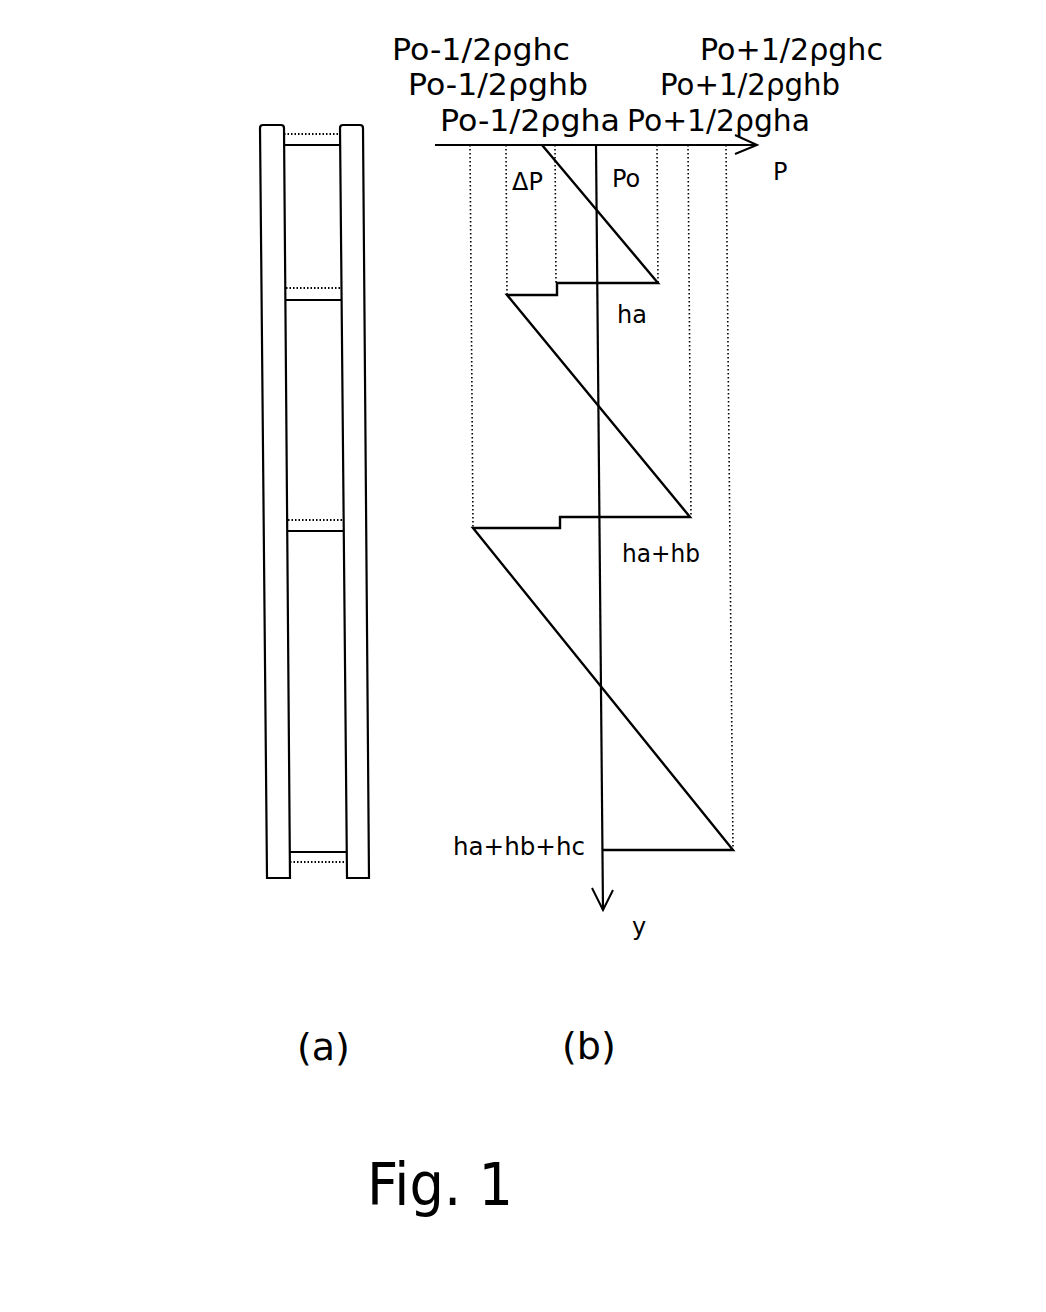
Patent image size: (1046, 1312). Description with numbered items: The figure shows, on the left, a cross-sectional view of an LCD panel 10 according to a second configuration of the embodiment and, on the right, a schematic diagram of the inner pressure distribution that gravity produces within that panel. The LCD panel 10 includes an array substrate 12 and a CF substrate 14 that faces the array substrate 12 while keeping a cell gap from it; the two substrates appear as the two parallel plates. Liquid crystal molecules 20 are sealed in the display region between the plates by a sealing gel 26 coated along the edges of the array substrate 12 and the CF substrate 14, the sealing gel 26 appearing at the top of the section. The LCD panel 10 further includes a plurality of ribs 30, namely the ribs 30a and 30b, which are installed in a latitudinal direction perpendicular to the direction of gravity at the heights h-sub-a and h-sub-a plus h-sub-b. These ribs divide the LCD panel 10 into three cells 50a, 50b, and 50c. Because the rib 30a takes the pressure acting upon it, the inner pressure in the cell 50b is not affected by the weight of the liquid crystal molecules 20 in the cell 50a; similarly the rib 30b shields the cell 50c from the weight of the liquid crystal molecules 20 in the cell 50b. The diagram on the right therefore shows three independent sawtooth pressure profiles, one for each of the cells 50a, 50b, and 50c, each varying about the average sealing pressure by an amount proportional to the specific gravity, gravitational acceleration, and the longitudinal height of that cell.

The LCD panel 10 is at (230, 108).
The array substrate 12 is at (278, 243).
The CF substrate 14 is at (363, 858).
The liquid crystal molecules 20 is at (312, 408).
The sealing gel 26 is at (385, 33).
The ribs 30 is at (96, 350).
The rib 30a is at (312, 292).
The rib 30b is at (312, 532).
The cell 50a is at (308, 228).
The cell 50b is at (310, 378).
The cell 50c is at (312, 635).